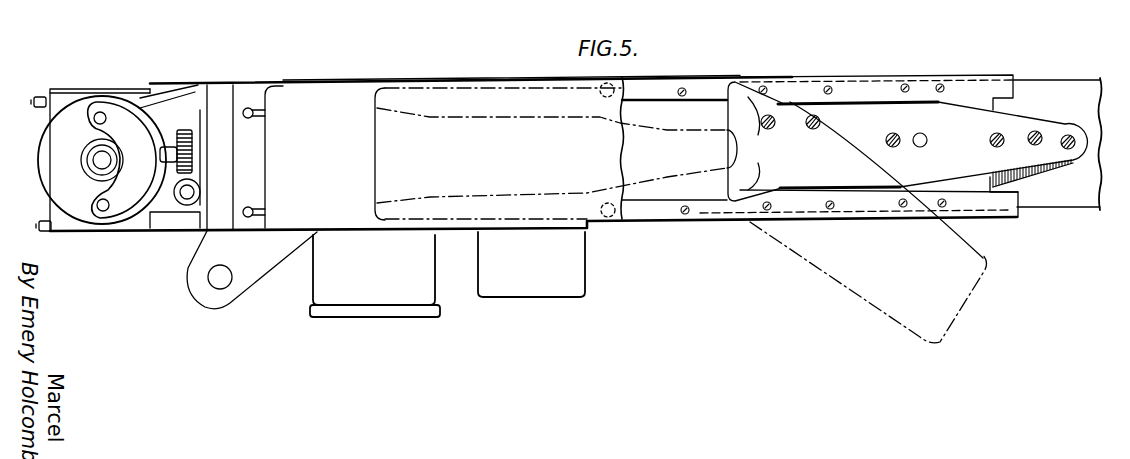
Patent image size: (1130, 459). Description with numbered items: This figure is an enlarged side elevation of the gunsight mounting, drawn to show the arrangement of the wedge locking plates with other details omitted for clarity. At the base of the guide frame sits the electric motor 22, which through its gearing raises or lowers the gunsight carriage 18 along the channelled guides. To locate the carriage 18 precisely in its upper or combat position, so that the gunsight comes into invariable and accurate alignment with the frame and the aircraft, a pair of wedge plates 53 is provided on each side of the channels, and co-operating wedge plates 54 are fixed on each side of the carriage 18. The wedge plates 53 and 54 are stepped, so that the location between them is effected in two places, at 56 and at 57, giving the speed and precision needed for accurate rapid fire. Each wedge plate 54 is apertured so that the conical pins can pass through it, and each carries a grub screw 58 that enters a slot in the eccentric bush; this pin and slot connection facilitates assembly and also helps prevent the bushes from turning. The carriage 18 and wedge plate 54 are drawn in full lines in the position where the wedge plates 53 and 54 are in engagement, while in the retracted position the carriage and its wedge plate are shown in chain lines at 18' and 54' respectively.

The gunsight carriage 18 is at (1057, 169).
The gunsight carriage in retracted position 18' is at (868, 282).
The electric motor 22 is at (83, 197).
The wedge plate 53 is at (930, 75).
The wedge plate 54 is at (780, 120).
The wedge plate in retracted position 54' is at (551, 134).
The location point 56 is at (963, 177).
The location point 57 is at (755, 141).
The grub screw 58 is at (872, 143).